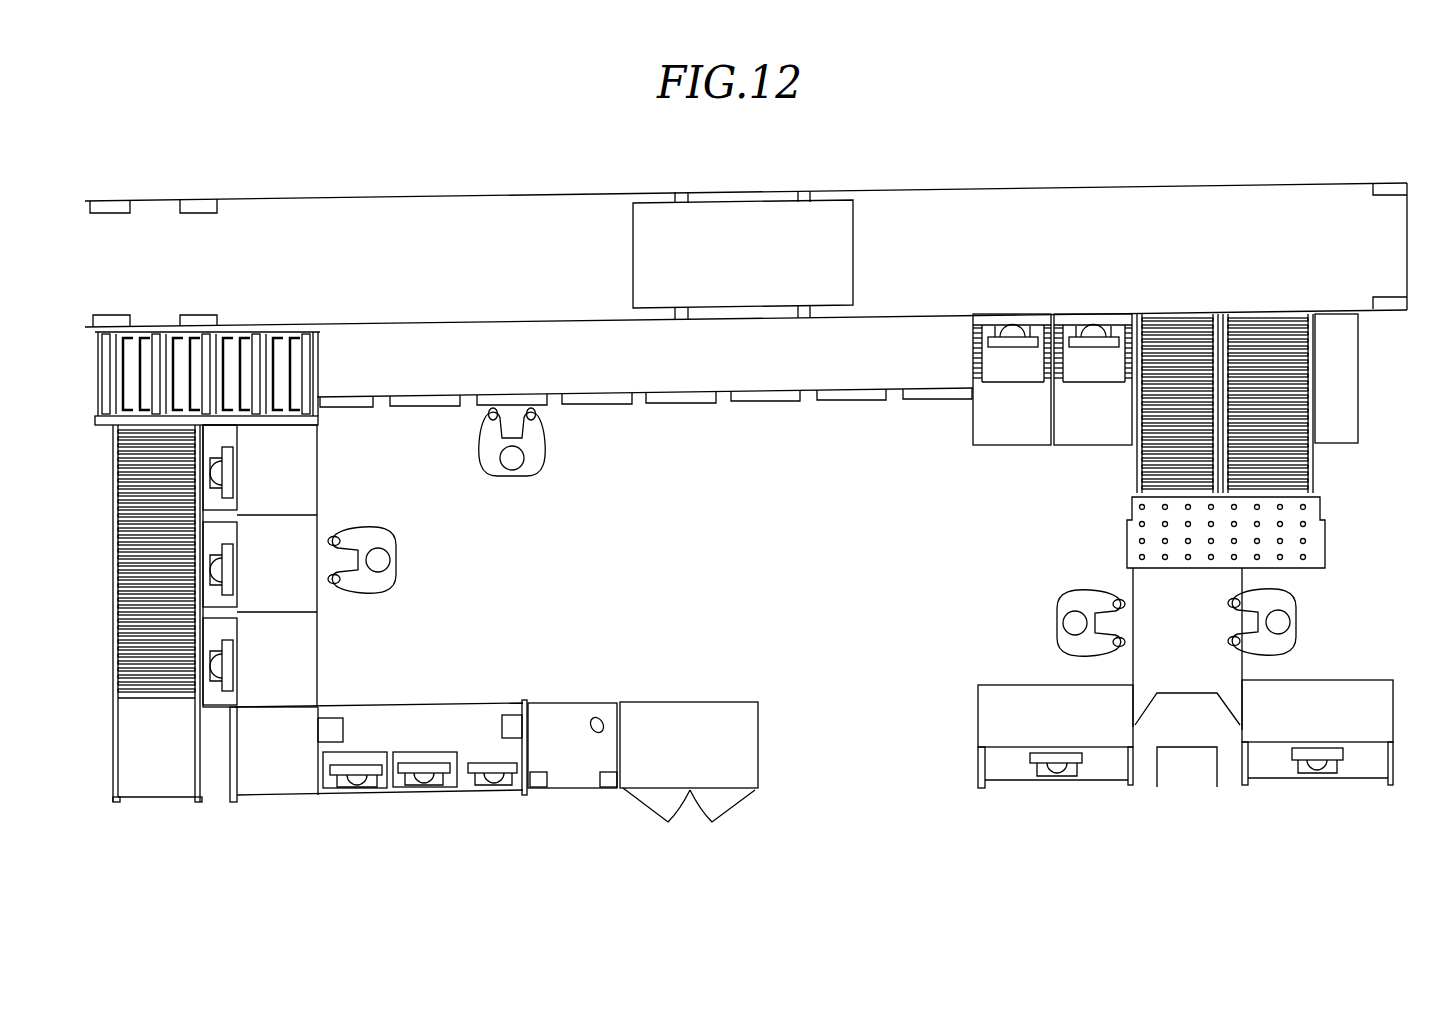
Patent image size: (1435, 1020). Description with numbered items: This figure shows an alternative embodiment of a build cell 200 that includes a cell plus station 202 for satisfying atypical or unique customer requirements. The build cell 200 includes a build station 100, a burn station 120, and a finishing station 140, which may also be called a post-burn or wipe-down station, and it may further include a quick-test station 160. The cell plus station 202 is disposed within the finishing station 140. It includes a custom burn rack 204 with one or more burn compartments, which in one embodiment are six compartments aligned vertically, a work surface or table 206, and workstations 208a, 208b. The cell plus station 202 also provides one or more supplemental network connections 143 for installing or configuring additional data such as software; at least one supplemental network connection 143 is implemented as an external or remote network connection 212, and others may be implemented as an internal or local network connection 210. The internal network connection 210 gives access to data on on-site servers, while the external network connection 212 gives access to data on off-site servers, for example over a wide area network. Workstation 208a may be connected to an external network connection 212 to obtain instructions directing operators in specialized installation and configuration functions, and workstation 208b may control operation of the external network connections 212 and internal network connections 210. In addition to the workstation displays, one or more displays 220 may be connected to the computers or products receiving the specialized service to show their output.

The build cell 200 is at (1054, 154).
The burn station 120 is at (647, 432).
The finishing station 140 is at (467, 548).
The quick-test station 160 is at (926, 467).
The build station 100 is at (1010, 605).
The cell plus station 202 is at (494, 712).
The custom burn rack 204 is at (572, 717).
The work surface or table 206 is at (396, 706).
The workstation 208a is at (357, 790).
The workstation 208b is at (420, 788).
The internal network connection 210 is at (338, 717).
The external network connection 212 is at (508, 714).
The display 220 is at (477, 762).
The supplemental network connection 143 is at (592, 732).